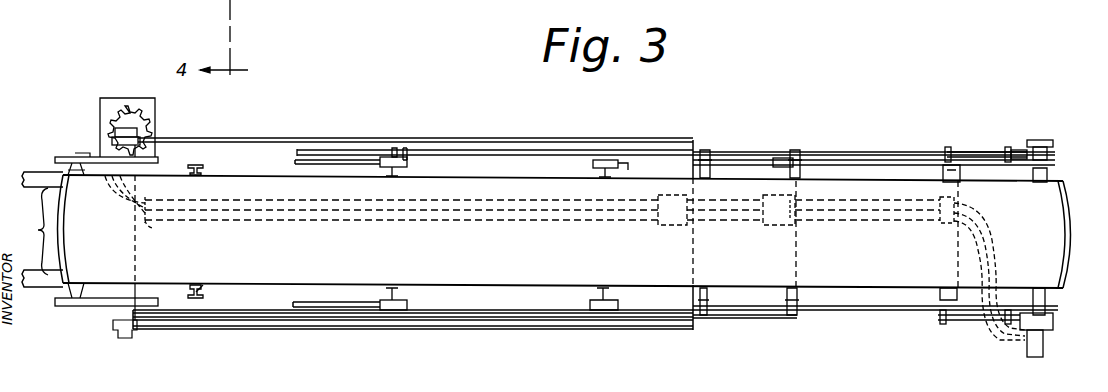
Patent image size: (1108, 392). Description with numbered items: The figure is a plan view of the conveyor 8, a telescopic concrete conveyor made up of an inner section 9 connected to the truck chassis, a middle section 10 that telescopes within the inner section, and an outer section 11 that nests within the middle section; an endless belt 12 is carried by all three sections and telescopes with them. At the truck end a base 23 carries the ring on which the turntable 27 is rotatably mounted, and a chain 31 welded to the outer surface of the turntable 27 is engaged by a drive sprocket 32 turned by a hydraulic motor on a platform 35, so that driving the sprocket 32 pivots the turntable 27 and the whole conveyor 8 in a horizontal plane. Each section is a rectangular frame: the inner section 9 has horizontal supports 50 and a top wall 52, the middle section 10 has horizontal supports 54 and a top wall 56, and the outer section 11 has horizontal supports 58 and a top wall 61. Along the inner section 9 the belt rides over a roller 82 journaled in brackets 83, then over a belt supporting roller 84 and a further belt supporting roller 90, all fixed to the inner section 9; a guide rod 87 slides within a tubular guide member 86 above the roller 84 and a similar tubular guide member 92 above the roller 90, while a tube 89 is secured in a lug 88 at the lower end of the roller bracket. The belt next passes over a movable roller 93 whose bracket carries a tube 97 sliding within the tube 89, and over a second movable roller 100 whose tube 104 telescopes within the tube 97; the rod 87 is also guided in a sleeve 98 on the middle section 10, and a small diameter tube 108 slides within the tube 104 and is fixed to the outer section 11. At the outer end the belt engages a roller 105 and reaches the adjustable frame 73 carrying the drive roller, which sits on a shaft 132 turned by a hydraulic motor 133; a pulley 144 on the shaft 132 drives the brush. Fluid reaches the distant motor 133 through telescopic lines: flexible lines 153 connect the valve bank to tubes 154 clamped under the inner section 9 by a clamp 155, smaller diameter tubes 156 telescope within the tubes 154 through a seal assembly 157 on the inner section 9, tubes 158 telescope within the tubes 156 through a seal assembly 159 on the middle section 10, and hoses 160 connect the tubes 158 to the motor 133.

The conveyor 8 is at (848, 100).
The inner section 9 is at (695, 140).
The middle section 10 is at (800, 148).
The outer section 11 is at (925, 165).
The endless belt 12 is at (1066, 182).
The base 23 is at (40, 229).
The turntable 27 is at (112, 298).
The chain 31 is at (70, 168).
The drive sprocket 32 is at (127, 116).
The platform 35 is at (100, 107).
The horizontal supports 50 is at (532, 140).
The top wall 52 is at (295, 152).
The horizontal supports 54 is at (746, 152).
The top wall 56 is at (760, 276).
The horizontal supports 58 is at (868, 152).
The top wall 61 is at (942, 158).
The adjustable frame 73 is at (1018, 152).
The roller 82 is at (201, 284).
The brackets 83 is at (204, 167).
The belt supporting roller 84 is at (390, 290).
The tubular guide member 86 is at (405, 148).
The guide rod 87 is at (335, 160).
The lug 88 is at (384, 143).
The tube 89 is at (252, 130).
The belt supporting roller 90 is at (628, 168).
The tubular guide member 92 is at (600, 160).
The movable roller 93 is at (712, 178).
The tube 97 is at (668, 150).
The sleeve 98 is at (782, 158).
The second movable roller 100 is at (805, 180).
The tube 104 is at (738, 150).
The roller 105 is at (938, 182).
The small diameter tube 108 is at (908, 152).
The shaft 132 is at (1040, 290).
The hydraulic motor 133 is at (1048, 342).
The pulley 144 is at (1040, 140).
The flexible lines 153 is at (122, 203).
The tubes 154 is at (350, 222).
The clamp 155 is at (150, 230).
The smaller diameter tubes 156 is at (756, 228).
The seal assembly 157 is at (676, 228).
The tubes 158 is at (938, 222).
The seal assembly 159 is at (790, 228).
The hoses 160 is at (990, 222).